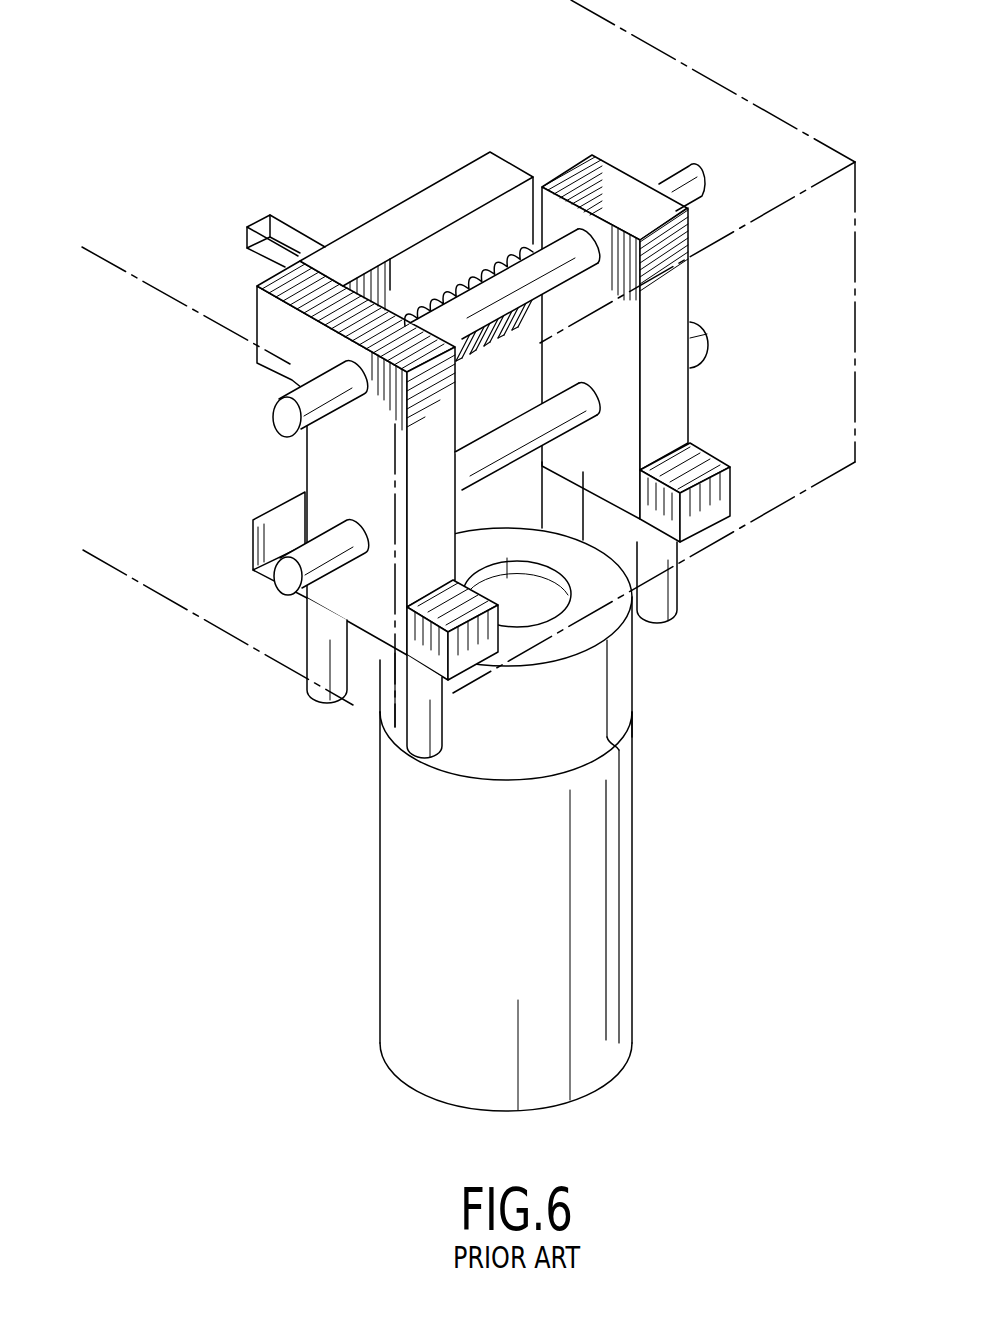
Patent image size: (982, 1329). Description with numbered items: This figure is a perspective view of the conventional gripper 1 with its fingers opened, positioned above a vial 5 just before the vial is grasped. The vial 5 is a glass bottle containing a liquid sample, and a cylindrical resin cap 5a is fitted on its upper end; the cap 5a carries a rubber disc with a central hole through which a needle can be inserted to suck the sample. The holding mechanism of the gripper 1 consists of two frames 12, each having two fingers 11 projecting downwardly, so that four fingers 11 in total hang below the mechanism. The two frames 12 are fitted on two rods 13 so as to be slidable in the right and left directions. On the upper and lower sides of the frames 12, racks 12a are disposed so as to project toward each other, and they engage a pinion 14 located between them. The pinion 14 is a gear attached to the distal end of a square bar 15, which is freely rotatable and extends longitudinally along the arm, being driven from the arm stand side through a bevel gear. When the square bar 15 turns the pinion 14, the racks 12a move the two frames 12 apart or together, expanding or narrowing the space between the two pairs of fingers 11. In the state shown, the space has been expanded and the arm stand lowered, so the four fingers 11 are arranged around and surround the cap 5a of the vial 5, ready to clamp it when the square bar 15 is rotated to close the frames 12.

The gripper 1 is at (817, 492).
The vial 5 is at (650, 855).
The cap 5a is at (610, 685).
The fingers 11 is at (555, 520).
The frames 12 is at (670, 403).
The racks 12a is at (457, 297).
The rods 13 is at (583, 245).
The pinion 14 is at (455, 303).
The square bar 15 is at (285, 236).